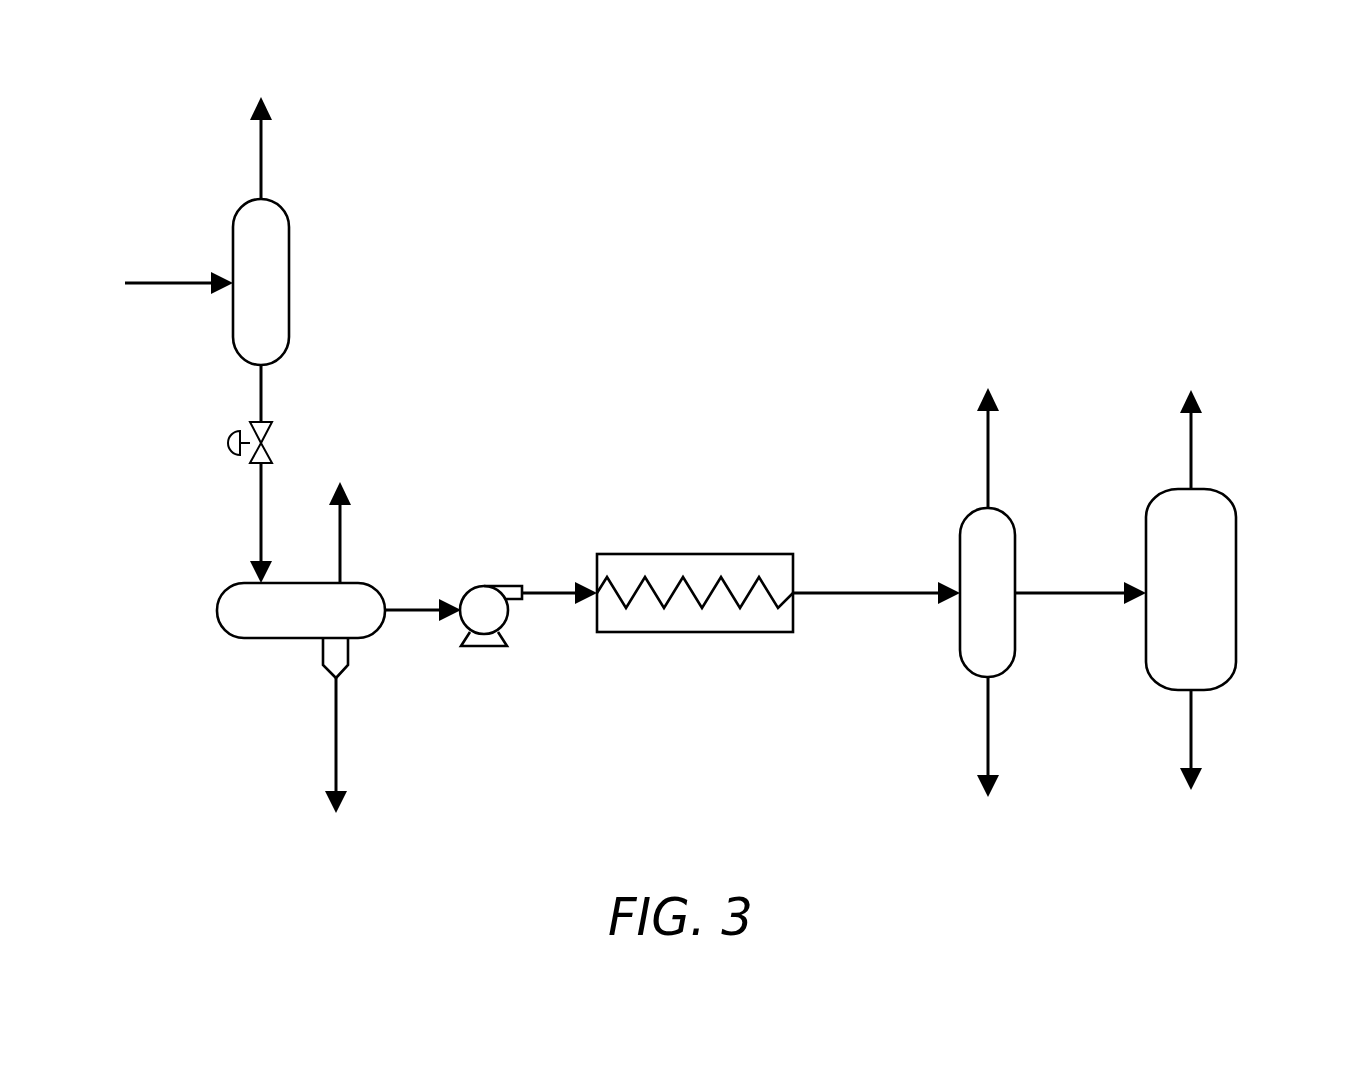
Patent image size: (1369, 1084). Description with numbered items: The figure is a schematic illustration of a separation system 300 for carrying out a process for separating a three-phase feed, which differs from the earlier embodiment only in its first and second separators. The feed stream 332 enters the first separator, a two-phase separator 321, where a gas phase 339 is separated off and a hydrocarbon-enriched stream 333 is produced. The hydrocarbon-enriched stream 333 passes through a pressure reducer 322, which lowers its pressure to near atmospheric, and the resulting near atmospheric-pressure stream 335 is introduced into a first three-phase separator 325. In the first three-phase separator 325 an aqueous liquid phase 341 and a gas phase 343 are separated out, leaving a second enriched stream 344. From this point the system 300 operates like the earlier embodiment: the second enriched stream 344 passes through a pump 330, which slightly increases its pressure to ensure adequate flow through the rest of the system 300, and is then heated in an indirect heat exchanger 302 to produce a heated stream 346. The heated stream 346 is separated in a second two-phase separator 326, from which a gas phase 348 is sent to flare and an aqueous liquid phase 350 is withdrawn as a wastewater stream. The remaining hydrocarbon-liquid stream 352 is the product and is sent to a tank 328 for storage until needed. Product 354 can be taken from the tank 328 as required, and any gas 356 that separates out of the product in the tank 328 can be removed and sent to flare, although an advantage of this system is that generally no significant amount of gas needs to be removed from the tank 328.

The system 300 is at (1200, 158).
The indirect heat exchanger 302 is at (673, 633).
The two-phase separator 321 is at (289, 236).
The pressure reducer 322 is at (228, 440).
The first three-phase separator 325 is at (222, 628).
The second two-phase separator 326 is at (961, 548).
The tank 328 is at (1237, 598).
The pump 330 is at (484, 586).
The feed stream 332 is at (148, 283).
The hydrocarbon-enriched stream 333 is at (263, 390).
The near atmospheric-pressure stream 335 is at (259, 530).
The gas phase 339 is at (261, 170).
The aqueous liquid phase 341 is at (336, 762).
The gas phase 343 is at (342, 532).
The second enriched stream 344 is at (410, 613).
The heated stream 346 is at (887, 594).
The gas phase 348 is at (986, 455).
The aqueous liquid phase 350 is at (986, 743).
The hydrocarbon-liquid stream 352 is at (1082, 586).
The product 354 is at (1193, 742).
The gas 356 is at (1193, 452).